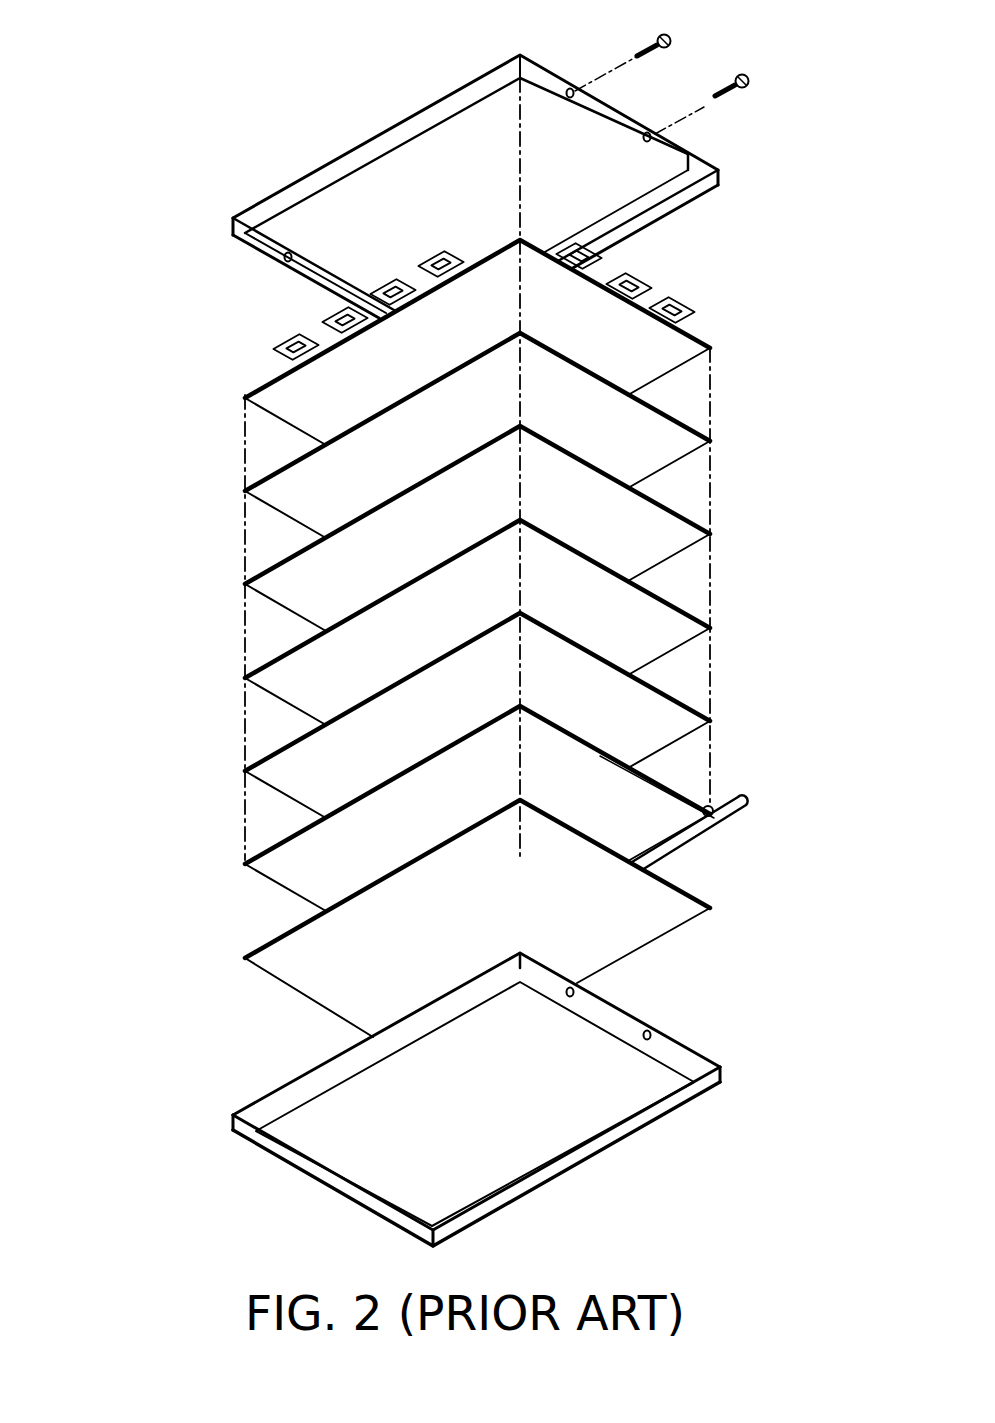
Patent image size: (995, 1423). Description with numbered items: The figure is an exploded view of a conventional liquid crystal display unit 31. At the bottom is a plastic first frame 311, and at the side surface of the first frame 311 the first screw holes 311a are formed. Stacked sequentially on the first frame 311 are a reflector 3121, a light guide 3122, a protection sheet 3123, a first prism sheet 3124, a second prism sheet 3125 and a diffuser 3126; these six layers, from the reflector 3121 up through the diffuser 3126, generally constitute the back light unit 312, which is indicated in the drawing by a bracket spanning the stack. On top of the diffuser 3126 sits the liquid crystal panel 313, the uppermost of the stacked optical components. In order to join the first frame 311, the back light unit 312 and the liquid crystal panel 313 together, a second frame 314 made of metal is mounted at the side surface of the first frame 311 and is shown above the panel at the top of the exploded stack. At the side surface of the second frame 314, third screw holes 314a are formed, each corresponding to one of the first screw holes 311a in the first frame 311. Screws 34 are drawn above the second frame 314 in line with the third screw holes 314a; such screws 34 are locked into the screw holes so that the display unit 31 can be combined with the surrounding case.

The liquid crystal display unit 31 is at (132, 90).
The first frame 311 is at (263, 1159).
The first screw holes 311a is at (654, 1035).
The back light unit 312 is at (125, 519).
The reflector 3121 is at (282, 981).
The light guide 3122 is at (282, 888).
The protection sheet 3123 is at (282, 795).
The first prism sheet 3124 is at (282, 702).
The second prism sheet 3125 is at (282, 608).
The diffuser 3126 is at (282, 515).
The liquid crystal panel 313 is at (694, 335).
The second frame 314 is at (289, 189).
The third screw holes 314a is at (652, 137).
The screws 34 is at (671, 42).